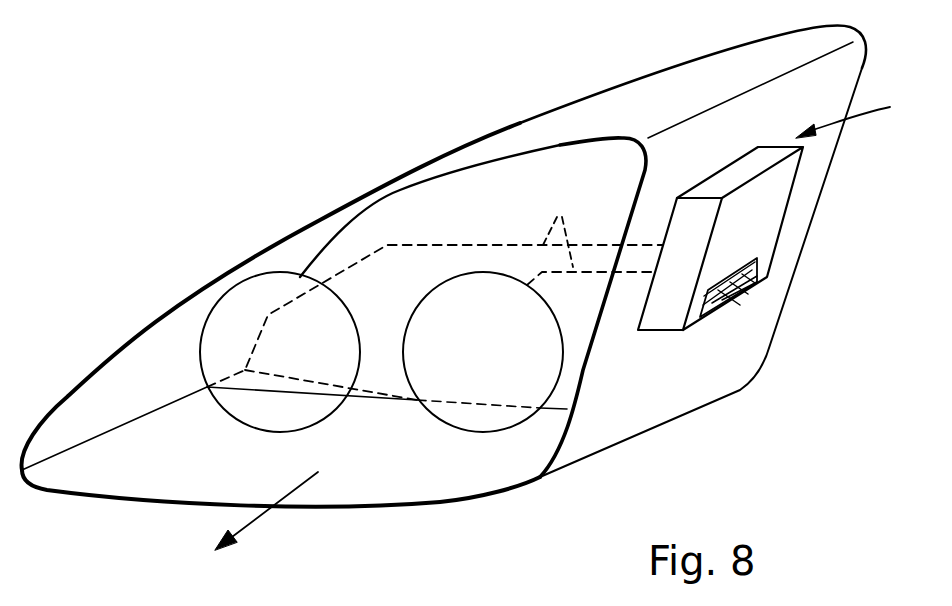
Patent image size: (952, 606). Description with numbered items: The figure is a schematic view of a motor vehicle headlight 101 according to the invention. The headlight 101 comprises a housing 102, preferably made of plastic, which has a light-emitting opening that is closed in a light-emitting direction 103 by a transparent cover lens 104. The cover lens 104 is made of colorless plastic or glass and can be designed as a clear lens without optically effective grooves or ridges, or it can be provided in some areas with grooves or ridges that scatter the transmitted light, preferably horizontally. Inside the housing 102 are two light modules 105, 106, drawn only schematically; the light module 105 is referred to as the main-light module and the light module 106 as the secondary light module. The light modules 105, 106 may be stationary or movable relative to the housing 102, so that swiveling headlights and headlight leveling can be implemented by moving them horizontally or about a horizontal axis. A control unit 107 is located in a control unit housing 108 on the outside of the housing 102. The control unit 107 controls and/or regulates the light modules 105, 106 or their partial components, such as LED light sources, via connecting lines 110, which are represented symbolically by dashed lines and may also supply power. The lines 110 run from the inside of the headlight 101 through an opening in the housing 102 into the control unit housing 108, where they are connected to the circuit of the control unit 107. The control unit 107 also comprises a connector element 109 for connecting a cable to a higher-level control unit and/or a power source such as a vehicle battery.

The headlight 101 is at (481, 310).
The housing 102 is at (573, 118).
The light-emitting direction 103 is at (257, 520).
The cover lens 104 is at (435, 475).
The light module 105 is at (431, 338).
The light module 106 is at (529, 352).
The control unit 107 is at (868, 111).
The control unit housing 108 is at (760, 213).
The connector element 109 is at (752, 278).
The connecting lines 110 is at (563, 226).